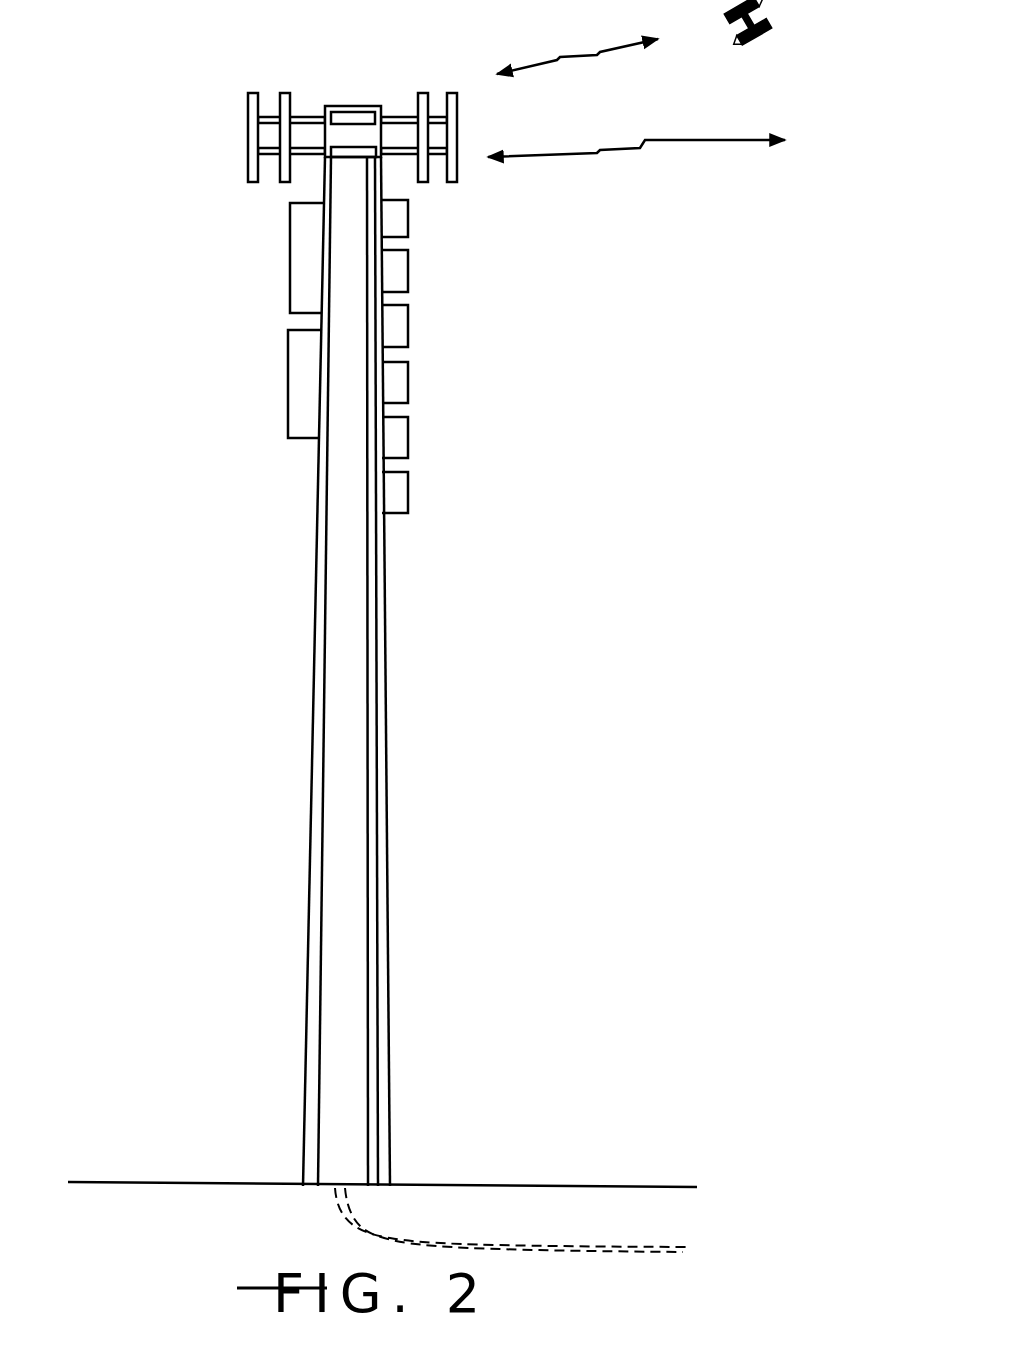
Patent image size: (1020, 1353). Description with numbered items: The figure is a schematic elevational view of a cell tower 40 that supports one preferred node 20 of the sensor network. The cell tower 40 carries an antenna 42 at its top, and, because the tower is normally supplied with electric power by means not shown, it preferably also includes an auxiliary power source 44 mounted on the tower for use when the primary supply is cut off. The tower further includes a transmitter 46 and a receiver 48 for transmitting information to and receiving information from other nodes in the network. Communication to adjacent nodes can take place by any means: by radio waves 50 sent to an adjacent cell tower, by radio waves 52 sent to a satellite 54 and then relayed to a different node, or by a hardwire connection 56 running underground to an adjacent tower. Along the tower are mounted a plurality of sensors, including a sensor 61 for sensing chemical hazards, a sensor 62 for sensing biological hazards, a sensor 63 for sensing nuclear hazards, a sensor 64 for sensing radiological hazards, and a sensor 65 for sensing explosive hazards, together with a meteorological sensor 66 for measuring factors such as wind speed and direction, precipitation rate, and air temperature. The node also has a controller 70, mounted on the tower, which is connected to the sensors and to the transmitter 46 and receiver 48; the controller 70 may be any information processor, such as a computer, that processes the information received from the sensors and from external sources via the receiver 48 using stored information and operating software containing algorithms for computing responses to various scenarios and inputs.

The node 20 is at (583, 405).
The cell tower 40 is at (304, 534).
The antenna 42 is at (249, 112).
The auxiliary power source 44 is at (288, 383).
The transmitter 46 is at (358, 158).
The receiver 48 is at (353, 106).
The radio waves 50 is at (690, 142).
The radio waves 52 is at (547, 63).
The satellite 54 is at (733, 34).
The hardwire connection 56 is at (530, 1242).
The sensor for sensing chemical hazards 61 is at (408, 222).
The sensor for sensing biological hazards 62 is at (408, 278).
The sensor for sensing nuclear hazards 63 is at (408, 330).
The sensor for sensing radiological hazards 64 is at (408, 387).
The sensor for sensing explosive hazards 65 is at (408, 440).
The meteorological sensor 66 is at (408, 492).
The controller 70 is at (290, 262).